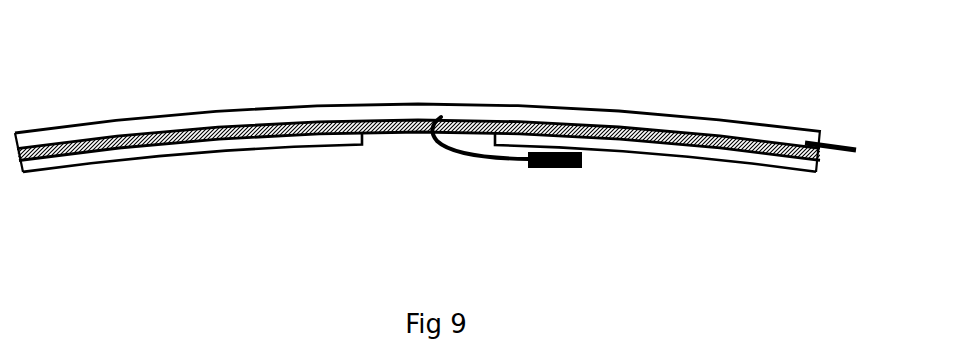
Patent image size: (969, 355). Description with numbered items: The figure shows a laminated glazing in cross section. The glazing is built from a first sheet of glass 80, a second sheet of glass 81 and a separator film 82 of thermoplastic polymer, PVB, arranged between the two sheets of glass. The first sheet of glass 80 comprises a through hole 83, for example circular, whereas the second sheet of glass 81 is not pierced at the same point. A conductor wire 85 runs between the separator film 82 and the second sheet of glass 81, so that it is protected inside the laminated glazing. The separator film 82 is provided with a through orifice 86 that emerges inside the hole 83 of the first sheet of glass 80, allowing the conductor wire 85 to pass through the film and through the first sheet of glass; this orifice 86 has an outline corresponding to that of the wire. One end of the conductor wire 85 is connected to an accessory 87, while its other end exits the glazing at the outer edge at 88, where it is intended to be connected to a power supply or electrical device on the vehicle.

The first sheet of glass 80 is at (708, 147).
The second sheet of glass 81 is at (190, 113).
The separator film 82 is at (297, 119).
The through hole 83 is at (390, 147).
The conductor wire 85 is at (560, 122).
The through orifice 86 is at (440, 117).
The accessory 87 is at (562, 168).
The outer edge exit 88 is at (835, 140).